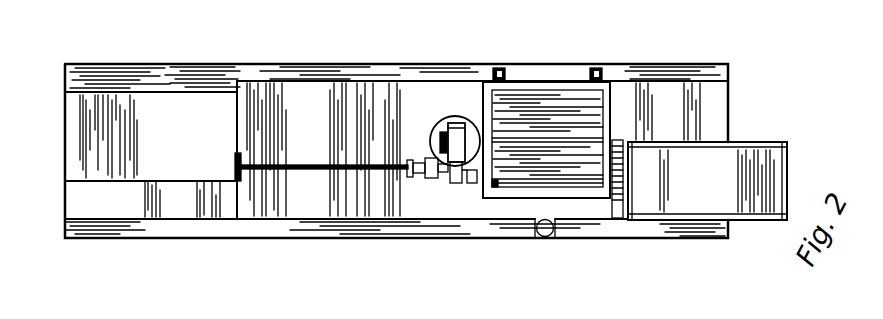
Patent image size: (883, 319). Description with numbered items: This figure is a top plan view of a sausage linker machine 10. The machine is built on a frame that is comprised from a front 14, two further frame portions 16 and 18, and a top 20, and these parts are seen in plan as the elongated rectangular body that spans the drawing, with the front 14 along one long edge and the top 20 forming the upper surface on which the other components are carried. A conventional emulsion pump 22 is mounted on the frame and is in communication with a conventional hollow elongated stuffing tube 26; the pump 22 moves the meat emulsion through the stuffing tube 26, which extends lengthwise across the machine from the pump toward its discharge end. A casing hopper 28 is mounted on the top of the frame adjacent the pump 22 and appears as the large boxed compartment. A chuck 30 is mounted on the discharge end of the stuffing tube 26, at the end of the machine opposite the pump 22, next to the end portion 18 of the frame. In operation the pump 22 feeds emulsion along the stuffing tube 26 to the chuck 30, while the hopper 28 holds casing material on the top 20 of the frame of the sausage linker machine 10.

The sausage linker machine 10 is at (317, 239).
The front 14 is at (392, 240).
The frame side 16 is at (65, 214).
The frame side 18 is at (728, 93).
The top 20 is at (97, 225).
The emulsion pump 22 is at (445, 119).
The stuffing tube 26 is at (340, 165).
The casing hopper 28 is at (483, 83).
The chuck 30 is at (620, 152).